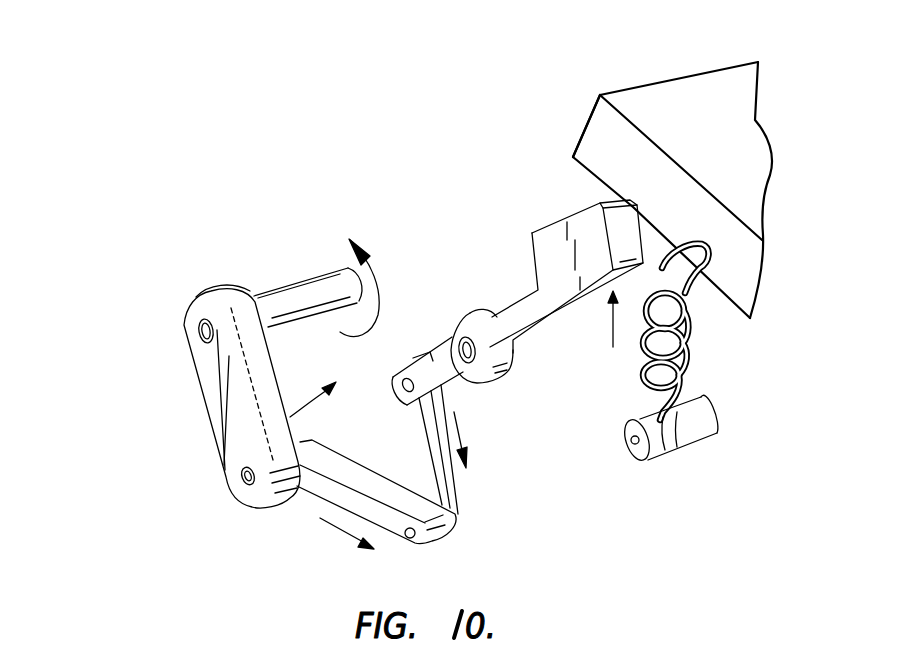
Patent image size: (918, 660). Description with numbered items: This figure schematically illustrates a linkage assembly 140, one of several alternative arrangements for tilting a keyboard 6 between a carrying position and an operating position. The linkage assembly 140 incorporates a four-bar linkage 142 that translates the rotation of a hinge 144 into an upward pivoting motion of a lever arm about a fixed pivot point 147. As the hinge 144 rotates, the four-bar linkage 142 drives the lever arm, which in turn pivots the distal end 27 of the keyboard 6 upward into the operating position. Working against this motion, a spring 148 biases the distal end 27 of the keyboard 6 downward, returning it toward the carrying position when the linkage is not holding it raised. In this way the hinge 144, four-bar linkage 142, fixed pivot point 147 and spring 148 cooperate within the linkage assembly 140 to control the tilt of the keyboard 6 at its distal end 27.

The keyboard 6 is at (695, 62).
The distal end 27 is at (603, 148).
The linkage assembly 140 is at (215, 443).
The four-bar linkage 142 is at (291, 507).
The hinge 144 is at (313, 293).
The fixed pivot point 147 is at (452, 323).
The spring 148 is at (628, 412).